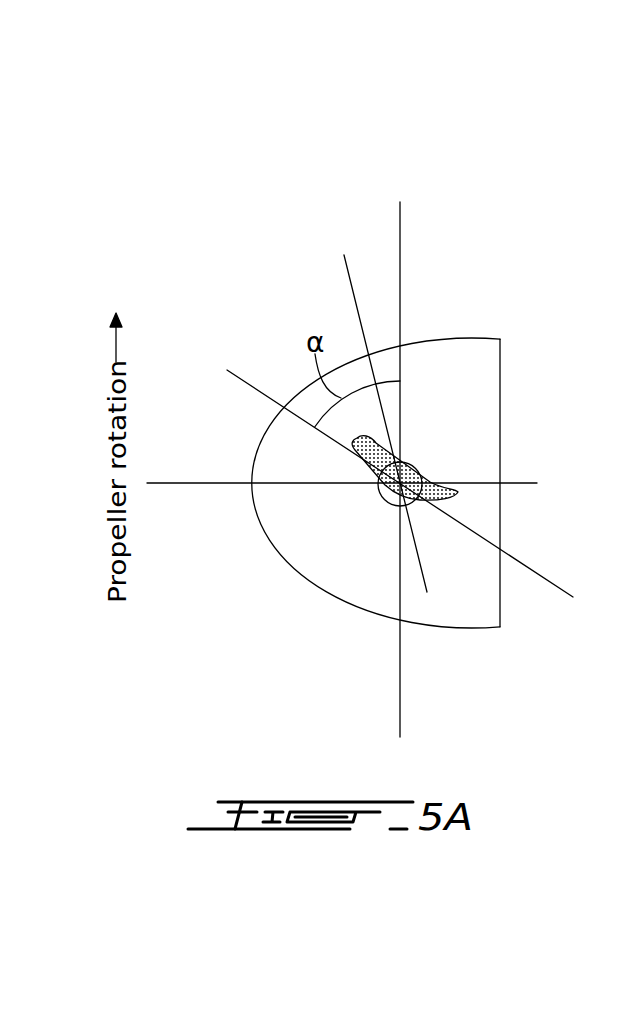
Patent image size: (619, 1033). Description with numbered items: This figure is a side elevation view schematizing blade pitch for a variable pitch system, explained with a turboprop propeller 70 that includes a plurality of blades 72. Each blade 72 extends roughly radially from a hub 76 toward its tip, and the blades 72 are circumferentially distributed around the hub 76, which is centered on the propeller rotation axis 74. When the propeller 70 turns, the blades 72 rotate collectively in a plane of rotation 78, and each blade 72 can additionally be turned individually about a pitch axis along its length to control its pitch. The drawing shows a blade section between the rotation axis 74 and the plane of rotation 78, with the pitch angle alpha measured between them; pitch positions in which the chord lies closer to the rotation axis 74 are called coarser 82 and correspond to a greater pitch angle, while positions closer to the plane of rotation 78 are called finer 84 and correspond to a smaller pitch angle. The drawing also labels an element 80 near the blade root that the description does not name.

The propeller 70 is at (467, 277).
The blade 72 is at (355, 467).
The propeller rotation axis 74 is at (168, 482).
The hub 76 is at (261, 524).
The plane of rotation 78 is at (400, 212).
The blade pivot / hub circle 80 is at (390, 504).
The coarser pitch 82 is at (246, 383).
The finer pitch 84 is at (350, 291).